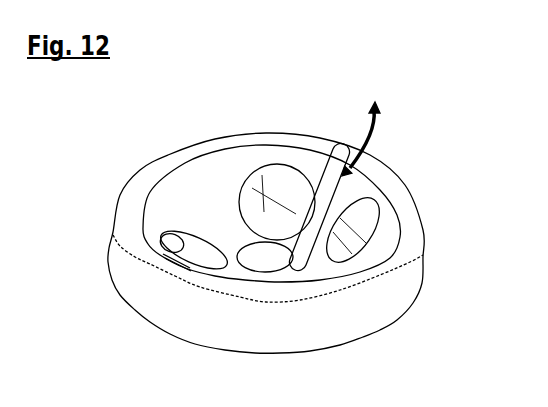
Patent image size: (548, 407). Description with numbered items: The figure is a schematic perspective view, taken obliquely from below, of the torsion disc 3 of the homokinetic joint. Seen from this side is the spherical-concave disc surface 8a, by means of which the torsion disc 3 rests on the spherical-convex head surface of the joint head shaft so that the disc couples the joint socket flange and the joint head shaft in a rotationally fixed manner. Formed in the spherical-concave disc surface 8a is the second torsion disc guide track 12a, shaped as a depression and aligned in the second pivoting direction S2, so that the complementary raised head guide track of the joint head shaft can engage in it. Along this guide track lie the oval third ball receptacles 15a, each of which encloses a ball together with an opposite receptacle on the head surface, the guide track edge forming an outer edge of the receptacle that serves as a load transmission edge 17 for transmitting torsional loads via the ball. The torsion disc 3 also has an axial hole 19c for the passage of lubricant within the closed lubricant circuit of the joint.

The torsion disc 3 is at (365, 60).
The spherical-concave disc surface 8a is at (193, 193).
The third ball receptacle 15a is at (285, 182).
The second torsion disc guide track 12a is at (340, 198).
The axial hole 19c is at (255, 258).
The second pivoting direction S2 is at (379, 139).
The load transmission edge 17 is at (37, 395).